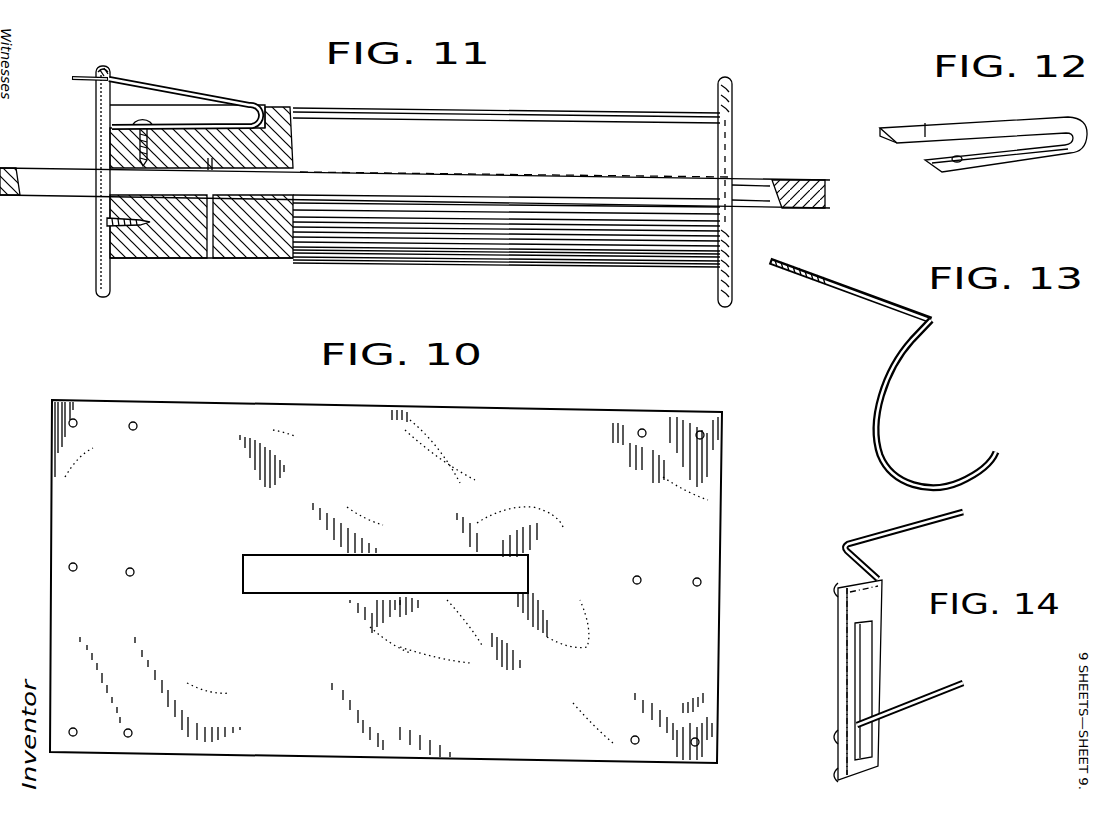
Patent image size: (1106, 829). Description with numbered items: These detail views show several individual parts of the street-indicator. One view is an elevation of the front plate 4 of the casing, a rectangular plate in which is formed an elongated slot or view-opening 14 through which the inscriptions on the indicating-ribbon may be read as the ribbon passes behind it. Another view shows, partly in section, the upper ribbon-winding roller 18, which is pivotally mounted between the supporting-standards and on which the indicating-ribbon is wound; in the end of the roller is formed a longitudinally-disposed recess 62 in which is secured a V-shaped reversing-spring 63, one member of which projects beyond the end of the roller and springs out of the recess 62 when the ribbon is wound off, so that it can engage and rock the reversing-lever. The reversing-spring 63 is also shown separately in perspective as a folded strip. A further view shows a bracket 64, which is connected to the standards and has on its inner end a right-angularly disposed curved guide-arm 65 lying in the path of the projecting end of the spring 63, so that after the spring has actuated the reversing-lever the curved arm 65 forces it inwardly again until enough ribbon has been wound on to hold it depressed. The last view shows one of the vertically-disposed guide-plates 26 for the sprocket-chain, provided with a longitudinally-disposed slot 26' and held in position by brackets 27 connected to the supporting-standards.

In FIG. 10, the front plate 4 is at (386, 581).
In FIG. 10, the elongated slot or view-opening 14 is at (400, 567).
In FIG. 11, the upper ribbon-winding roller 18 is at (553, 138).
In FIG. 14, the guide-plate 26 is at (833, 681).
In FIG. 14, the longitudinally-disposed slot 26' is at (892, 690).
In FIG. 14, the bracket 27 is at (903, 543).
In FIG. 11, the longitudinally-disposed recess 62 is at (100, 100).
In FIG. 11, the V-shaped reversing-spring 63 is at (182, 98).
In FIG. 12, the V-shaped reversing-spring 63 is at (967, 125).
In FIG. 13, the bracket 64 is at (860, 288).
In FIG. 13, the curved guide-arm 65 is at (887, 428).